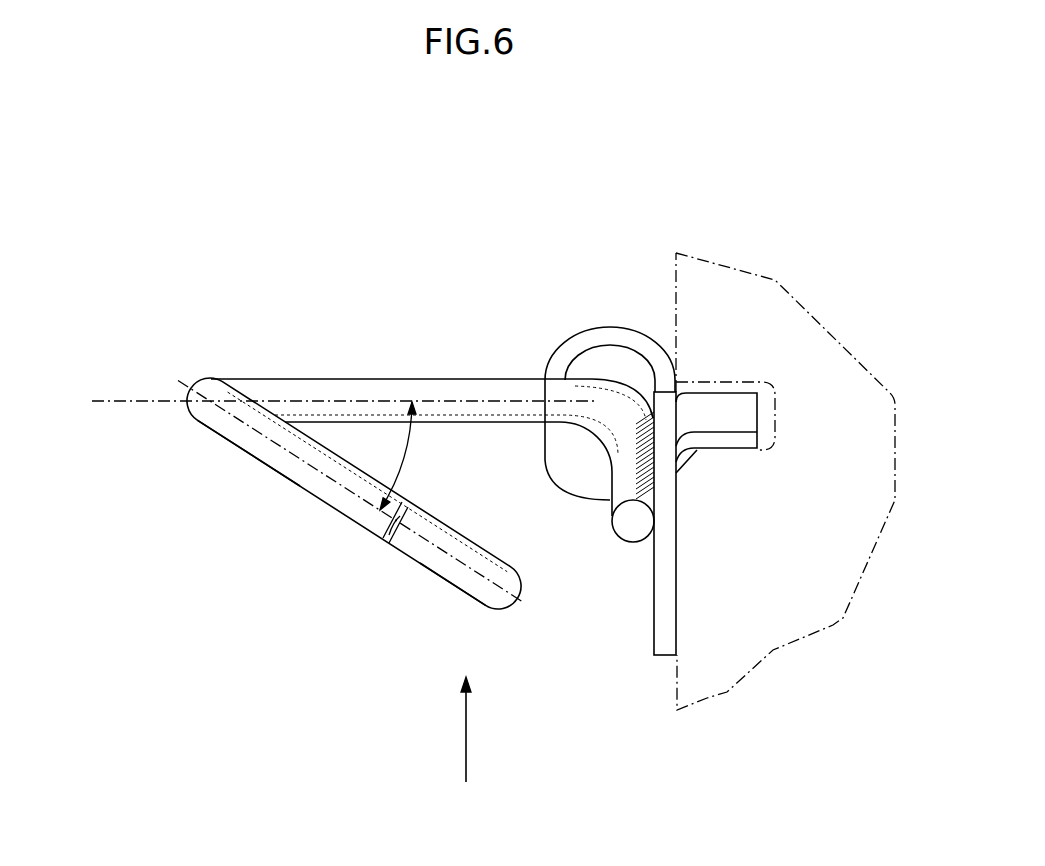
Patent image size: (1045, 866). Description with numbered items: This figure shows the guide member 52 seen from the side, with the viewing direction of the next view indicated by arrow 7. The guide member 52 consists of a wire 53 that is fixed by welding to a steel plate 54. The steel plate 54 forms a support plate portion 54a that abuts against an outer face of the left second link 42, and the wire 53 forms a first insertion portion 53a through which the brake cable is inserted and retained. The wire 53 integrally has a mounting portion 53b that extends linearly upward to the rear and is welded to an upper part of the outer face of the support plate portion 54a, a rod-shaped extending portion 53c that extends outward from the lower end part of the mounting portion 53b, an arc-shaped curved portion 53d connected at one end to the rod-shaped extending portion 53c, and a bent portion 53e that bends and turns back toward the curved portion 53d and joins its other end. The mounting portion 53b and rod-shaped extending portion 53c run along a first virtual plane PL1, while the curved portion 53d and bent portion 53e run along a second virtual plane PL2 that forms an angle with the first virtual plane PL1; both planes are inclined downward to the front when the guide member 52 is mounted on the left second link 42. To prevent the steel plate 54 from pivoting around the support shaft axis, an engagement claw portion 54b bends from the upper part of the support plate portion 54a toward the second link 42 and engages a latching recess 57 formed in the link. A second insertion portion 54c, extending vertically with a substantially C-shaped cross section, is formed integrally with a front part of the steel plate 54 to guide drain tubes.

The left second link 42 is at (783, 300).
The guide member 52 is at (600, 245).
The wire 53 is at (510, 378).
The first insertion portion 53a is at (342, 518).
The mounting portion 53b is at (620, 472).
The rod-shaped extending portion 53c is at (337, 390).
The curved portion 53d is at (255, 430).
The bent portion 53e is at (457, 575).
The steel plate 54 is at (665, 386).
The support plate portion 54a is at (660, 610).
The engagement claw portion 54b is at (717, 407).
The second insertion portion 54c is at (565, 460).
The latching recess 57 is at (732, 382).
The first virtual plane PL1 is at (138, 400).
The second virtual plane PL2 is at (458, 531).
The arrow 7 is at (466, 757).